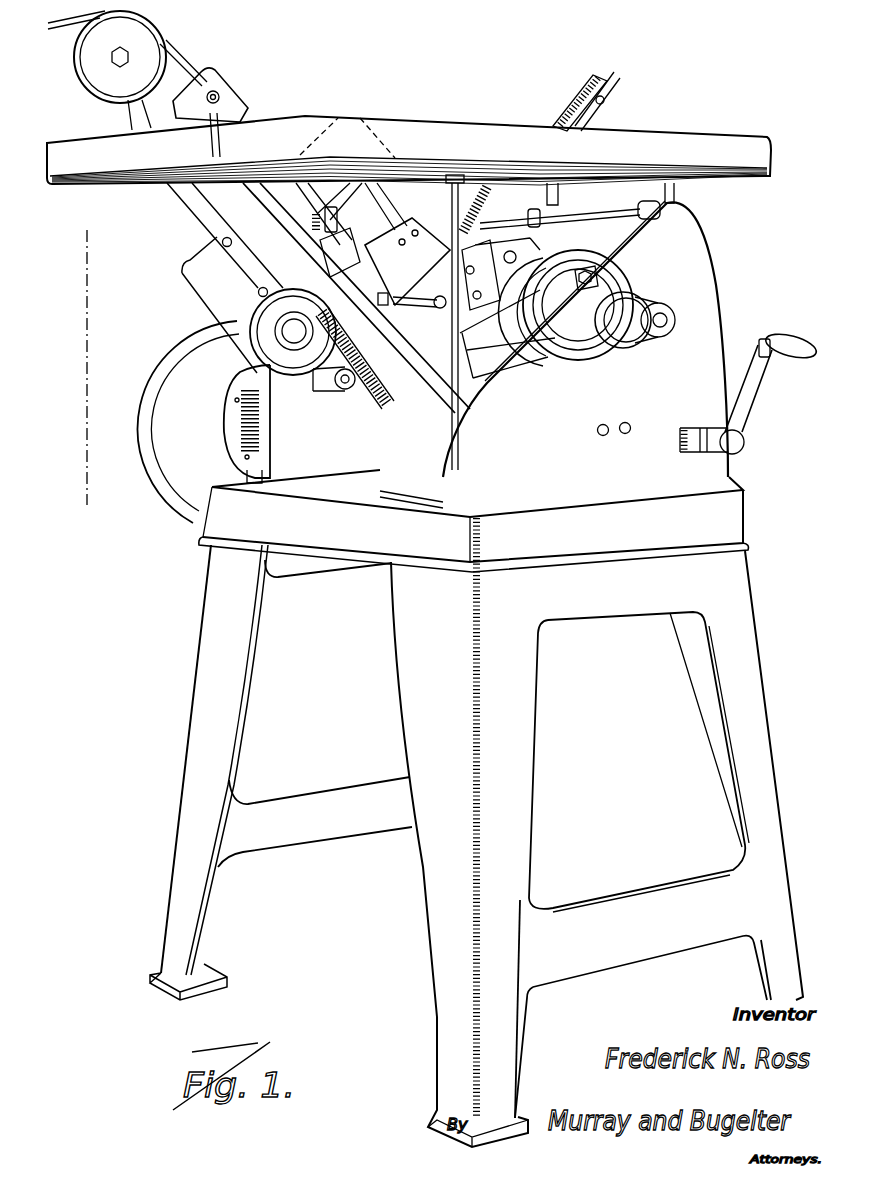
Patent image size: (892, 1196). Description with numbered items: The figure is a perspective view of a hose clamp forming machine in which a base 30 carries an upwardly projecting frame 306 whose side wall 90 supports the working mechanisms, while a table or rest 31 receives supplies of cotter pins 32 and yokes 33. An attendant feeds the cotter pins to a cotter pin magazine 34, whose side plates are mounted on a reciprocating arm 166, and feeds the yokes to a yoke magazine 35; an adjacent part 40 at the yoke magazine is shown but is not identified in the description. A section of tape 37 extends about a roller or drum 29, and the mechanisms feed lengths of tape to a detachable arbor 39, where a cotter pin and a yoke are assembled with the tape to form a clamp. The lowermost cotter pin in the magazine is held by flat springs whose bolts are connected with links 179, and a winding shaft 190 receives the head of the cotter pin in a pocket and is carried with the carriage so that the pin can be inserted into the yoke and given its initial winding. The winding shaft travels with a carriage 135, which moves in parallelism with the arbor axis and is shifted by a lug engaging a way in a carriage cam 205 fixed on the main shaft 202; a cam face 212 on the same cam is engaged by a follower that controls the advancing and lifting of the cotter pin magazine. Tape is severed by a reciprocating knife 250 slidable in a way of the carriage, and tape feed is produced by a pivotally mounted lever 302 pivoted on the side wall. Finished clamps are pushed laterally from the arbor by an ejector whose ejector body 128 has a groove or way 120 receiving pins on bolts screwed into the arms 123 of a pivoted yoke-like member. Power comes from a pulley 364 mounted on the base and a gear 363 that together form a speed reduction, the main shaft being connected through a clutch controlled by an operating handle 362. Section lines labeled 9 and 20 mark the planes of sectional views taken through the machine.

The section line 9- 9 is at (626, 242).
The section line 20- 20 is at (103, 242).
The roller or drum 29 is at (90, 78).
The base 30 is at (245, 643).
The table or rest 31 is at (695, 147).
The cotter pin 32 is at (343, 274).
The yoke 33 is at (583, 92).
The cotter pin magazine 34 is at (217, 70).
The yoke magazine 35 is at (608, 86).
The tape 37 is at (178, 60).
The arbor 39 is at (320, 323).
The knob 40 is at (600, 101).
The side wall 90 is at (182, 267).
The groove or way 120 is at (293, 343).
The arms 123 is at (297, 283).
The ejector body 128 is at (243, 337).
The carriage 135 is at (500, 357).
The reciprocating arm 166 is at (283, 190).
The link 179 is at (337, 215).
The winding shaft 190 is at (397, 296).
The main shaft 202 is at (662, 318).
The carriage cam 205 is at (517, 330).
The cam face 212 is at (612, 262).
The reciprocating knife 250 is at (390, 222).
The lever 302 is at (340, 190).
The frame 306 is at (689, 251).
The operating handle 362 is at (748, 402).
The gear 363 is at (240, 402).
The pulley 364 is at (177, 365).